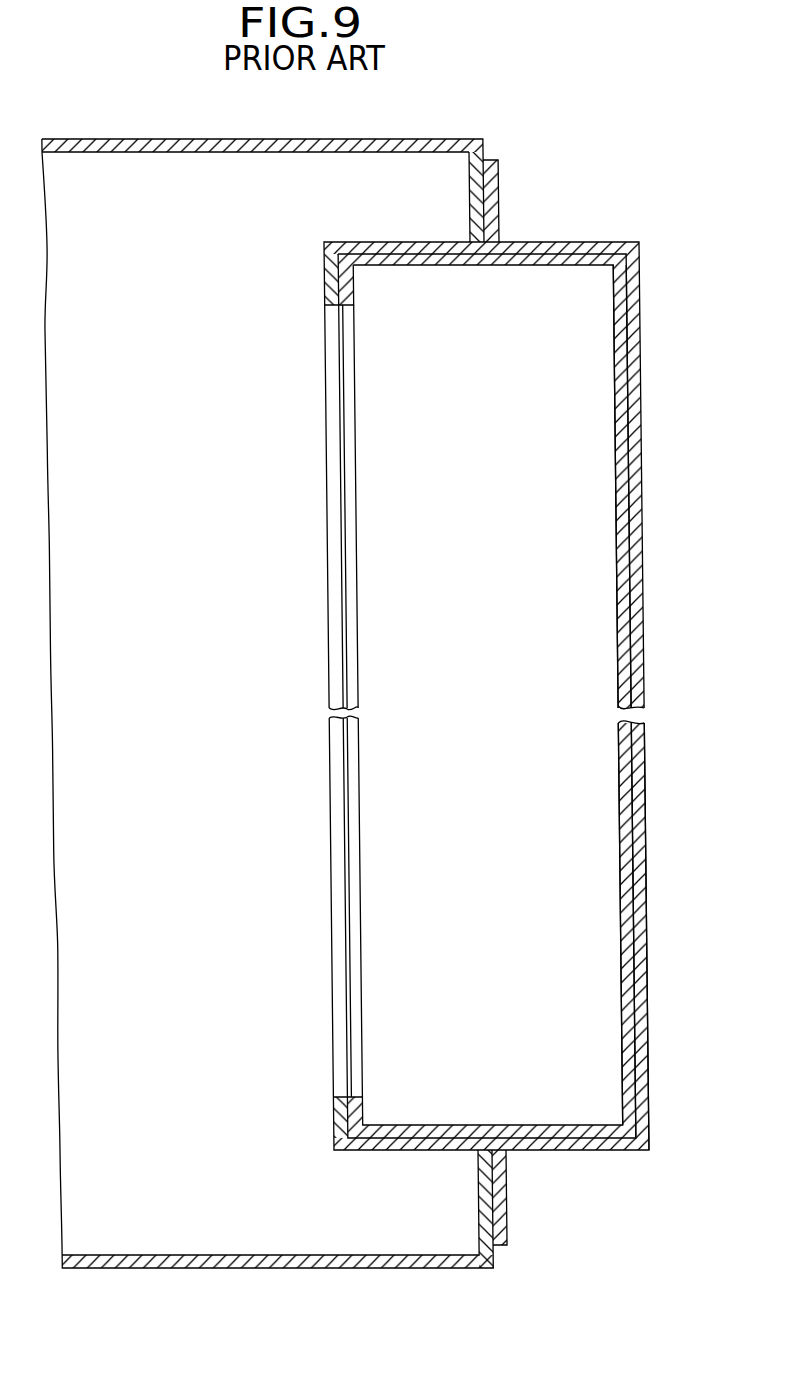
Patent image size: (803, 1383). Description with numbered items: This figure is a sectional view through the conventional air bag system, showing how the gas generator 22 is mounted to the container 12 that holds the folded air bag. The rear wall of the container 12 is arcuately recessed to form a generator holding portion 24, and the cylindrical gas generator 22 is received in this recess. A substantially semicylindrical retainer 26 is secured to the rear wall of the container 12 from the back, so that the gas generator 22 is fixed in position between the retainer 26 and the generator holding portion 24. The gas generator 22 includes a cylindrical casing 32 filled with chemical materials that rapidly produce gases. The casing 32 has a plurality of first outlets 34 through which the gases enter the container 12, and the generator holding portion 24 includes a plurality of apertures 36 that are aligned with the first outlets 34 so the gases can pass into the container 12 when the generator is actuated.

The container 12 is at (73, 1270).
The gas generator 22 is at (604, 998).
The generator holding portion 24 is at (323, 284).
The retainer 26 is at (640, 812).
The casing 32 is at (613, 609).
The first outlets 34 is at (344, 603).
The apertures 36 is at (325, 603).